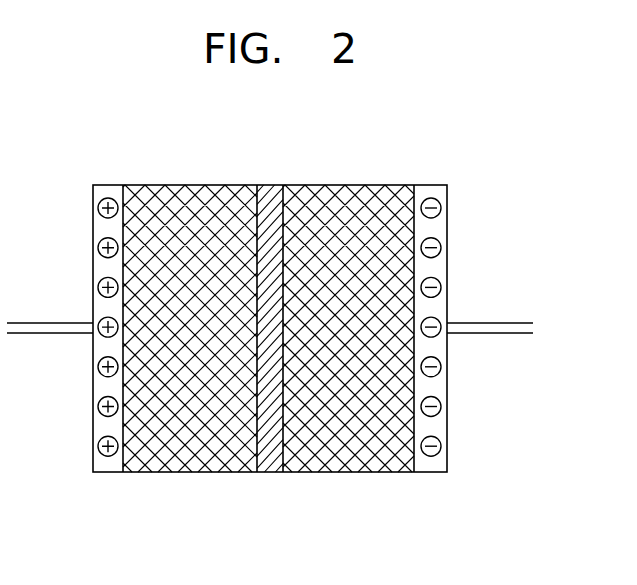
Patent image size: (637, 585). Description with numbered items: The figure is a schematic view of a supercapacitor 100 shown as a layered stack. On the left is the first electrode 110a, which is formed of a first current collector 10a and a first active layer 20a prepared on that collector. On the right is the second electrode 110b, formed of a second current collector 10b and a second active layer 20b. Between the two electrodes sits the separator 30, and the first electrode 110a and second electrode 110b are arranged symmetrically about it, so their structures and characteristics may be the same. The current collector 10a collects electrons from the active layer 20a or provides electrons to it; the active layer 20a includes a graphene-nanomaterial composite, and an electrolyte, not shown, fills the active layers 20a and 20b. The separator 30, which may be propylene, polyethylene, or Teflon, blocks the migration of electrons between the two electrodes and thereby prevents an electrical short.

The supercapacitor 100 is at (463, 159).
The first electrode 110a is at (190, 531).
The second electrode 110b is at (431, 531).
The first current collector 10a is at (108, 471).
The first active layer 20a is at (190, 471).
The separator 30 is at (270, 471).
The second active layer 20b is at (348, 471).
The second current collector 10b is at (431, 471).